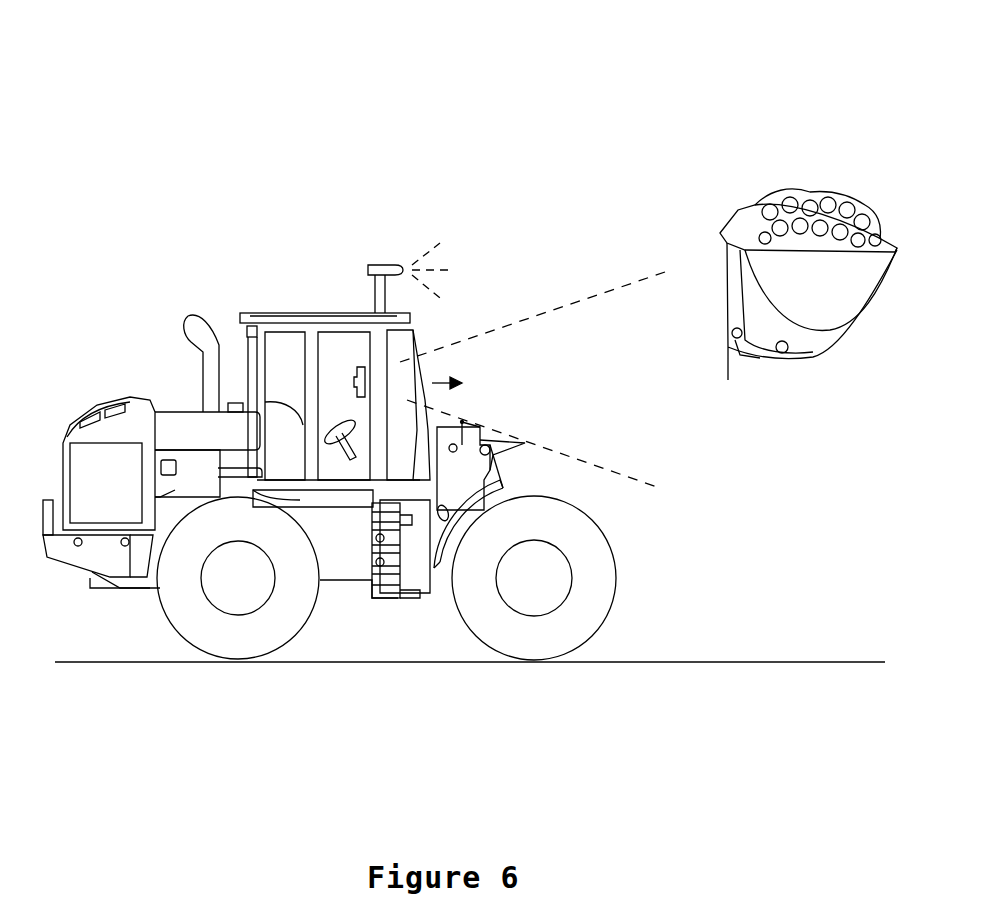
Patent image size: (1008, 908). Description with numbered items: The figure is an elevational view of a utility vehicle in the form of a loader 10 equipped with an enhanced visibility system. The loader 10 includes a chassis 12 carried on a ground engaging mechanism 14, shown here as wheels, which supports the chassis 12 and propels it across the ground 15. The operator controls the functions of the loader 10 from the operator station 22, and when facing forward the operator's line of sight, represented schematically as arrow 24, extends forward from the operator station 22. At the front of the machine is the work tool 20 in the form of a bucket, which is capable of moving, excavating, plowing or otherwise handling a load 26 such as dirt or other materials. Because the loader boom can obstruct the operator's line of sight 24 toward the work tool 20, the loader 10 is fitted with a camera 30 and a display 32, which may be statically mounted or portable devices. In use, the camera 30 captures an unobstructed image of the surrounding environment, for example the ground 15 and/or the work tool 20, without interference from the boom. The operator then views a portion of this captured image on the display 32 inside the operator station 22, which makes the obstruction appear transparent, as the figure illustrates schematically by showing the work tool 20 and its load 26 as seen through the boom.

The loader 10 is at (505, 152).
The chassis 12 is at (333, 585).
The ground engaging mechanism 14 is at (235, 642).
The ground 15 is at (786, 663).
The work tool 20 is at (843, 300).
The operator station 22 is at (347, 345).
The line of sight 24 is at (432, 383).
The load 26 is at (805, 207).
The camera 30 is at (385, 262).
The display 32 is at (357, 380).